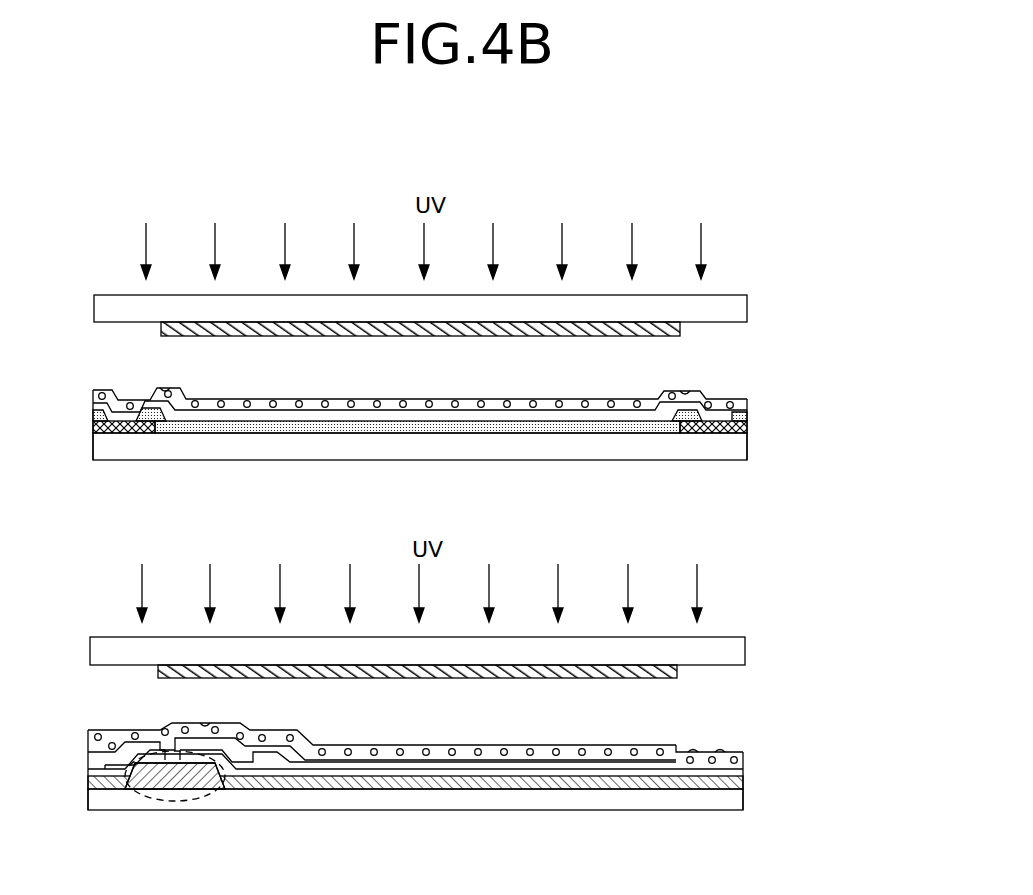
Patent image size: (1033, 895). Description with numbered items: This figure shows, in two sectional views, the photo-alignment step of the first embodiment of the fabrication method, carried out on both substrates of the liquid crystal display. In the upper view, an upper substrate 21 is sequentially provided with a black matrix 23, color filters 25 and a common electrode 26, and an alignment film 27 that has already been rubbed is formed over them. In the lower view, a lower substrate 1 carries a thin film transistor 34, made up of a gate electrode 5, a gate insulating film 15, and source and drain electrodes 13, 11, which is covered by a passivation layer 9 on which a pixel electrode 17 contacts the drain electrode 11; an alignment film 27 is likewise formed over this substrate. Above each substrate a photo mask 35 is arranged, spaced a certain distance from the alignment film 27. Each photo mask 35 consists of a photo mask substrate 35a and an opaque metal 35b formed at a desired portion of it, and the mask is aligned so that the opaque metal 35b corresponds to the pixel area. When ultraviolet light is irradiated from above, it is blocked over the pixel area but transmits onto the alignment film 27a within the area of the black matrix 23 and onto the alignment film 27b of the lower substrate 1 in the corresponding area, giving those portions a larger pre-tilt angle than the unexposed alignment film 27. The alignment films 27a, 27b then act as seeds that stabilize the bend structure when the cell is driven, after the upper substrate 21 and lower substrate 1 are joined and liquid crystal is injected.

The photo mask 35 is at (485, 448).
The photo mask substrate 35a is at (733, 316).
The opaque metal 35b is at (680, 337).
The upper substrate 21 is at (723, 461).
The black matrix 23 is at (747, 433).
The color filters 25 is at (747, 423).
The common electrode 26 is at (747, 406).
The alignment film 27 is at (601, 405).
The alignment film within black matrix area 27a is at (716, 400).
The alignment film of lower substrate corresponding to black matrix area 27b is at (692, 766).
The lower substrate 1 is at (737, 808).
The gate electrode 5 is at (164, 790).
The passivation layer 9 is at (743, 769).
The drain electrode 11 is at (218, 785).
The source electrode 13 is at (105, 771).
The gate insulating film 15 is at (740, 785).
The pixel electrode 17 is at (743, 757).
The thin film transistor 34 is at (137, 793).